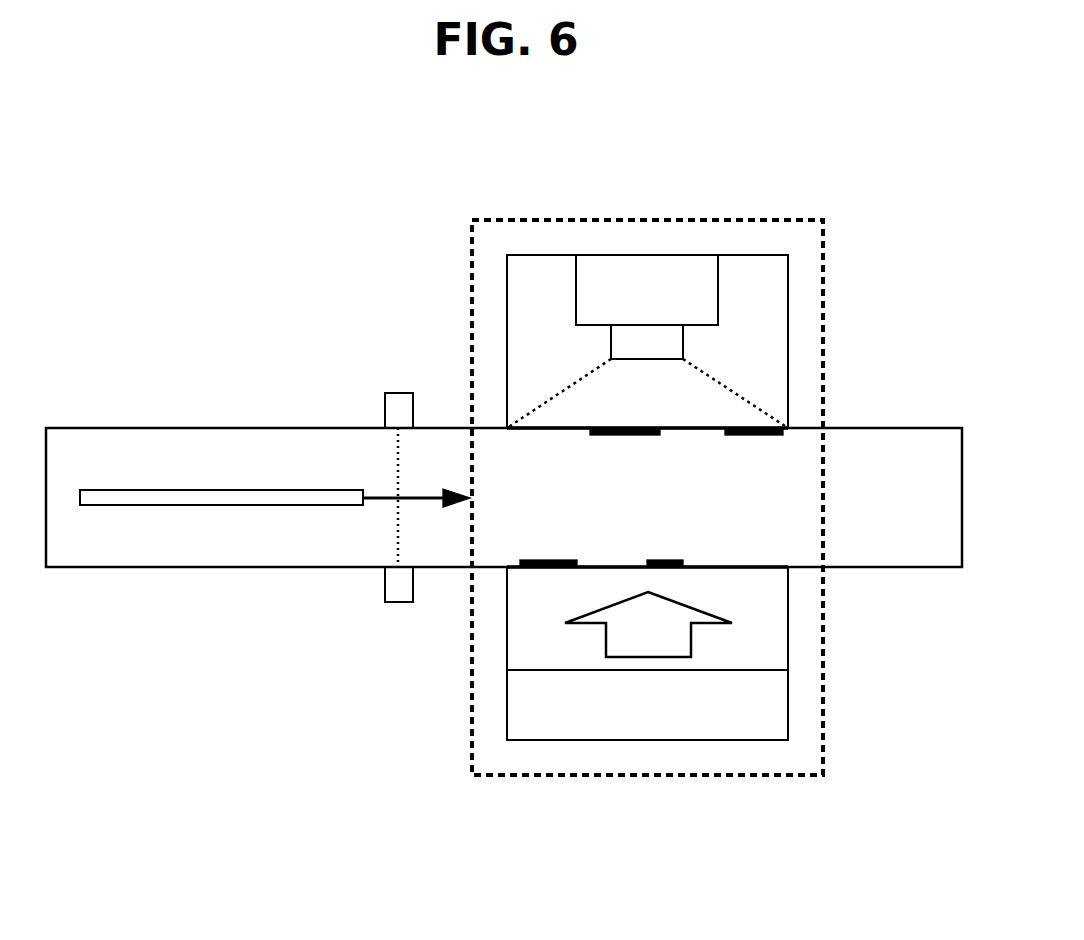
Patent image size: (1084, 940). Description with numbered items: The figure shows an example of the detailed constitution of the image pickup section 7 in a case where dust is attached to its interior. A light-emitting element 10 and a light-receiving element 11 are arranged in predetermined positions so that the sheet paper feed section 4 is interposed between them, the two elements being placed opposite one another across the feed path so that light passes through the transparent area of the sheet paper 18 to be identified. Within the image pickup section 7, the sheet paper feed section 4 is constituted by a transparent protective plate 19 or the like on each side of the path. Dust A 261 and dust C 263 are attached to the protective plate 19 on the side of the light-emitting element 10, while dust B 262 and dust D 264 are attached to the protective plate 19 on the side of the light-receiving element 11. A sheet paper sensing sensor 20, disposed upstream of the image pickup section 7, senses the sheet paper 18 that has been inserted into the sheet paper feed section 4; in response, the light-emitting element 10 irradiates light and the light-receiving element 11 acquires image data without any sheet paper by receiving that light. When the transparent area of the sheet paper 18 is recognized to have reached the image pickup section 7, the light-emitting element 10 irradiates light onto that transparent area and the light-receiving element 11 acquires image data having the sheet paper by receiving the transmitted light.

The sheet paper feed section 4 is at (858, 428).
The image pickup section 7 is at (823, 290).
The light-emitting element 10 is at (707, 669).
The light-receiving element 11 is at (705, 327).
The sheet paper 18 is at (153, 490).
The transparent protective plate 19 is at (543, 430).
The sheet paper sensing sensor 20 is at (397, 393).
The dust A 261 is at (660, 560).
The dust B 262 is at (612, 436).
The dust C 263 is at (542, 560).
The dust D 264 is at (740, 436).